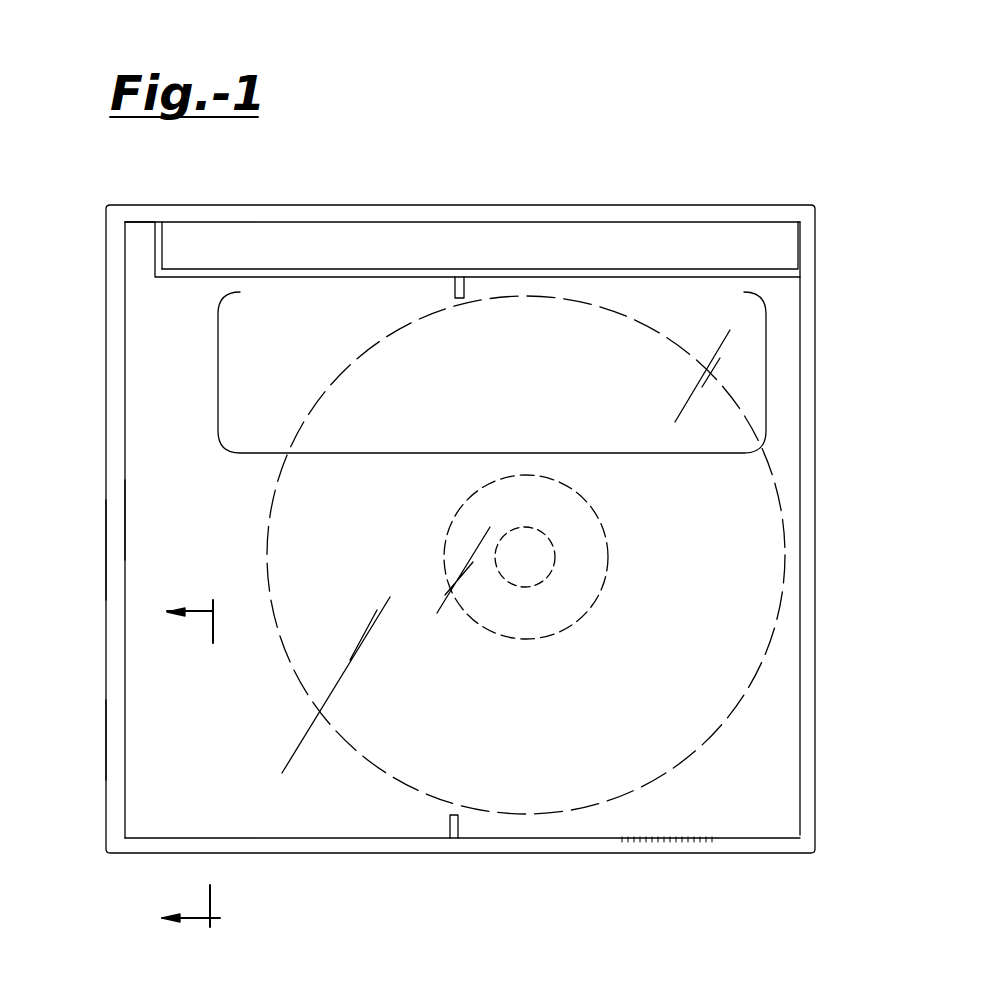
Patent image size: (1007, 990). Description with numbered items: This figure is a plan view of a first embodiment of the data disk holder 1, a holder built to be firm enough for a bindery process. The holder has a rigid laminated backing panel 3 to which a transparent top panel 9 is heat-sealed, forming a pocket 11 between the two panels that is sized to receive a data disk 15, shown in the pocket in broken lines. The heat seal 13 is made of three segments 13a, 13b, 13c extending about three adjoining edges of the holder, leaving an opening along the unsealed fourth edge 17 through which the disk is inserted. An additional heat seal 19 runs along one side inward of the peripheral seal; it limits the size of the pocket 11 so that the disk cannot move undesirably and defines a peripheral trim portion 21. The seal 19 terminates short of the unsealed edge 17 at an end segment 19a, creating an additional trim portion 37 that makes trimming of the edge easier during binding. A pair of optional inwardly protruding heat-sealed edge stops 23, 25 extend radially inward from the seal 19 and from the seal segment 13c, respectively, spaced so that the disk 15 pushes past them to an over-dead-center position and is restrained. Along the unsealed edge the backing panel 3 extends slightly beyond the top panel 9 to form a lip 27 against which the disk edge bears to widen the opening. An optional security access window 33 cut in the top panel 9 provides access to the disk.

The data disk holder 1 is at (648, 175).
The backing panel 3 is at (181, 765).
The top panel 9 is at (142, 523).
The pocket 11 is at (102, 545).
The heat seal 13 is at (787, 198).
The heat seal segment 13a is at (258, 212).
The heat seal segment 13b is at (805, 458).
The heat seal segment 13c is at (556, 848).
The data disk 15 is at (757, 680).
The unsealed fourth edge 17 is at (125, 647).
The additional heat seal 19 is at (502, 270).
The end segment 19a is at (163, 240).
The peripheral trim portion 21 is at (333, 242).
The edge stop 23 is at (457, 285).
The edge stop 25 is at (449, 822).
The lip 27 is at (112, 735).
The security access window 33 is at (767, 370).
The additional trim portion 37 is at (138, 238).